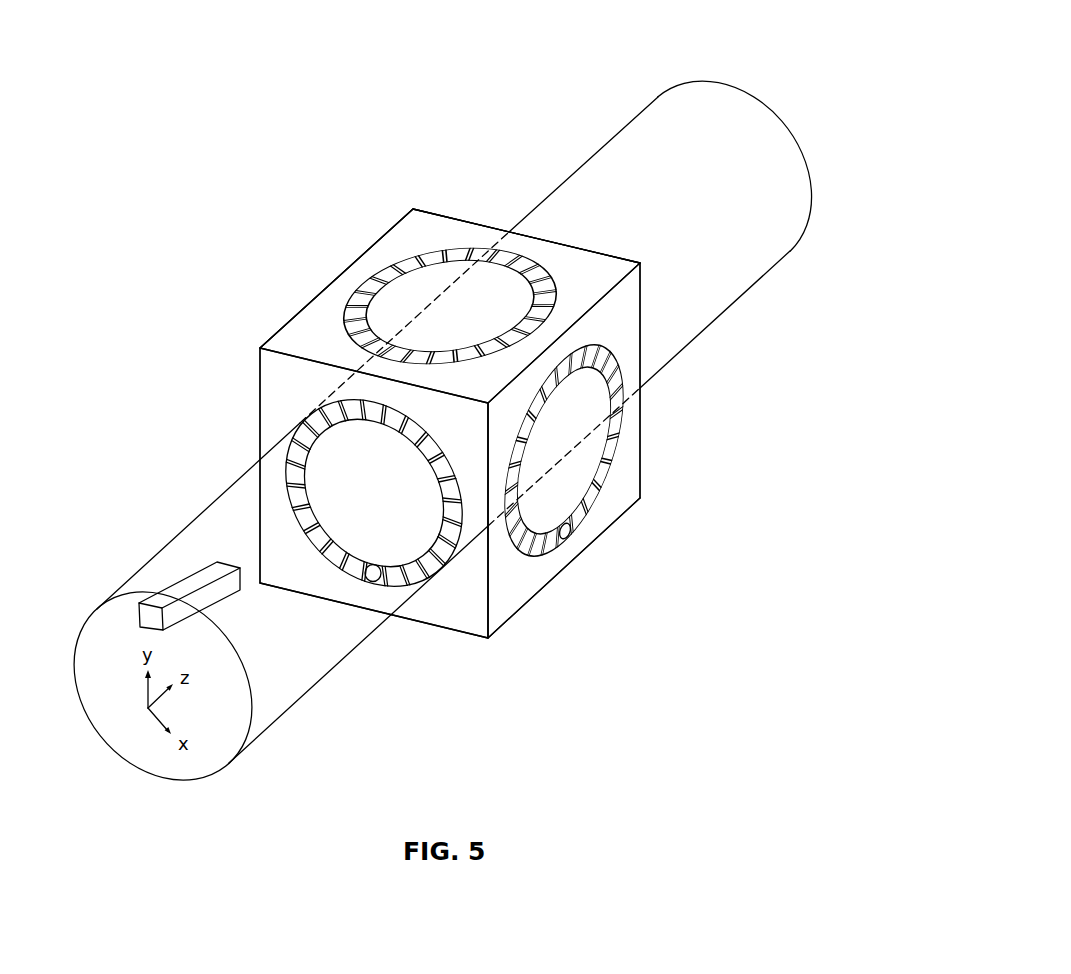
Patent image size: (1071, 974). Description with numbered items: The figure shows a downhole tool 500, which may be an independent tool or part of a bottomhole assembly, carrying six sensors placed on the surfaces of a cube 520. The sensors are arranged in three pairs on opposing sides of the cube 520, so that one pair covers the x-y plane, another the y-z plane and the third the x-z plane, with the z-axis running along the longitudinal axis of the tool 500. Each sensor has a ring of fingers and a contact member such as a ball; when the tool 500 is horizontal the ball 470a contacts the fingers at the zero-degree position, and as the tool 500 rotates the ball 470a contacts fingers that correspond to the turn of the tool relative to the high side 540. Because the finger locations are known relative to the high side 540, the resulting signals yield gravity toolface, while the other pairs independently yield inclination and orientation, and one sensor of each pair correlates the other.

The downhole tool 500 is at (692, 102).
The cube 520 is at (412, 204).
The ball 470a is at (363, 587).
The high side 540 is at (140, 562).